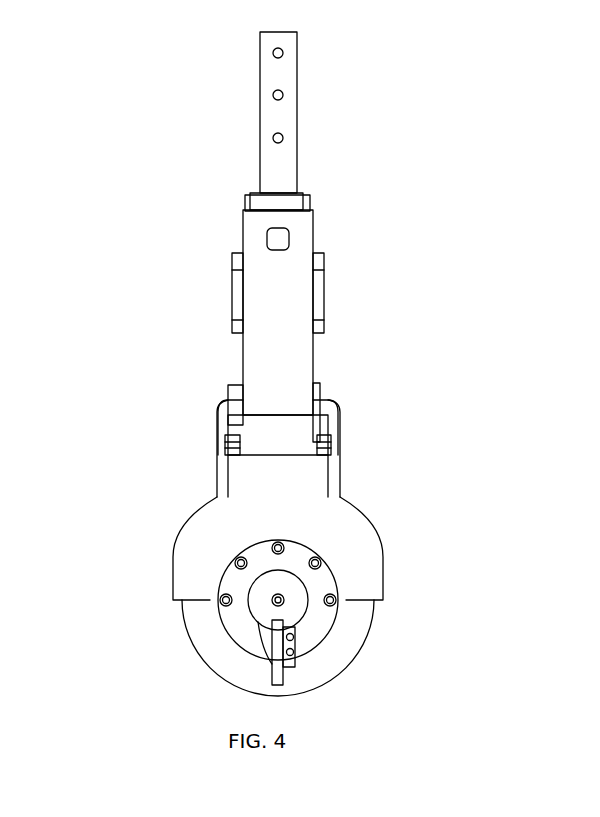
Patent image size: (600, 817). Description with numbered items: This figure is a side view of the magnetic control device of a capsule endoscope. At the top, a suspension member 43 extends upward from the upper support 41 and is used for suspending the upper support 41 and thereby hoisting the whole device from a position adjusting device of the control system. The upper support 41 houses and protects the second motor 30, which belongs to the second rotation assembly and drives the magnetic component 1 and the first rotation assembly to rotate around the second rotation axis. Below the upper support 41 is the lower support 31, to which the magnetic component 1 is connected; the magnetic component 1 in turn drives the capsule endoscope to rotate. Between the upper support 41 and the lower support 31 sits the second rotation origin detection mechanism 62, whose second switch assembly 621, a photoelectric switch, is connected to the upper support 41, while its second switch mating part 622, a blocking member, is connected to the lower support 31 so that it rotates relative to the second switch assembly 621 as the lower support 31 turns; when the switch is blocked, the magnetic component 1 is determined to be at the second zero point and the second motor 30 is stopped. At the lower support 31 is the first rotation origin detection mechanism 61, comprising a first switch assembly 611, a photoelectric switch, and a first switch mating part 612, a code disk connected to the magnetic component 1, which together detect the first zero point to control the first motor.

The magnetic component 1 is at (347, 648).
The second motor 30 is at (243, 290).
The lower support 31 is at (362, 543).
The upper support 41 is at (297, 354).
The suspension member 43 is at (277, 121).
The first rotation origin detection mechanism 61 is at (194, 613).
The first switch assembly 611 is at (275, 642).
The first switch mating part 612 is at (255, 612).
The second rotation origin detection mechanism 62 is at (198, 430).
The second switch assembly 621 is at (222, 422).
The second switch mating part 622 is at (227, 452).